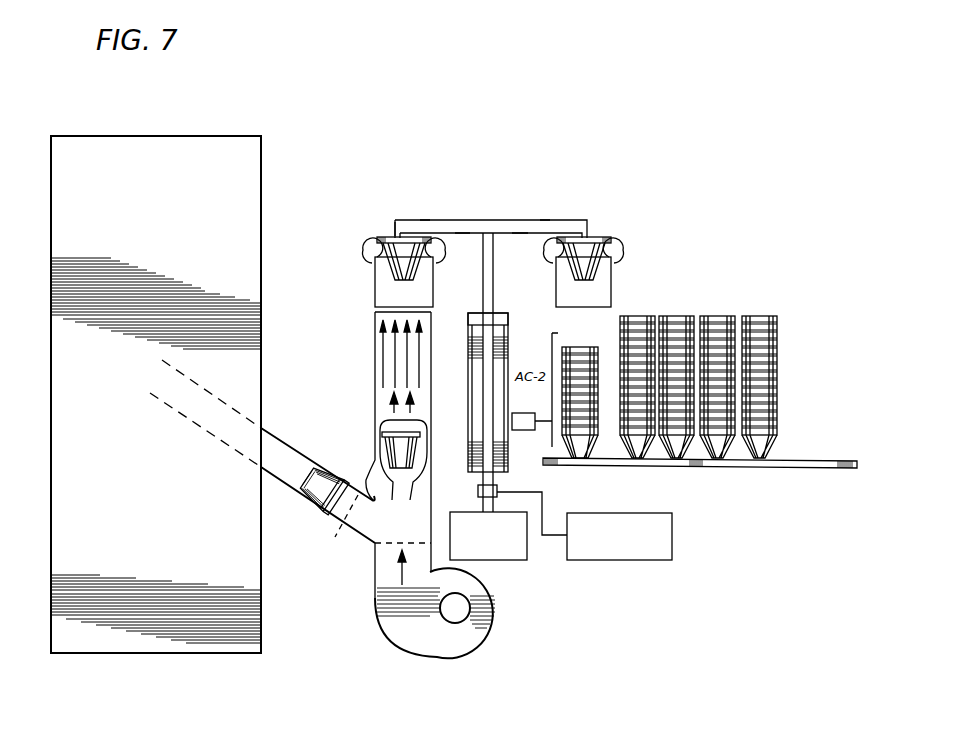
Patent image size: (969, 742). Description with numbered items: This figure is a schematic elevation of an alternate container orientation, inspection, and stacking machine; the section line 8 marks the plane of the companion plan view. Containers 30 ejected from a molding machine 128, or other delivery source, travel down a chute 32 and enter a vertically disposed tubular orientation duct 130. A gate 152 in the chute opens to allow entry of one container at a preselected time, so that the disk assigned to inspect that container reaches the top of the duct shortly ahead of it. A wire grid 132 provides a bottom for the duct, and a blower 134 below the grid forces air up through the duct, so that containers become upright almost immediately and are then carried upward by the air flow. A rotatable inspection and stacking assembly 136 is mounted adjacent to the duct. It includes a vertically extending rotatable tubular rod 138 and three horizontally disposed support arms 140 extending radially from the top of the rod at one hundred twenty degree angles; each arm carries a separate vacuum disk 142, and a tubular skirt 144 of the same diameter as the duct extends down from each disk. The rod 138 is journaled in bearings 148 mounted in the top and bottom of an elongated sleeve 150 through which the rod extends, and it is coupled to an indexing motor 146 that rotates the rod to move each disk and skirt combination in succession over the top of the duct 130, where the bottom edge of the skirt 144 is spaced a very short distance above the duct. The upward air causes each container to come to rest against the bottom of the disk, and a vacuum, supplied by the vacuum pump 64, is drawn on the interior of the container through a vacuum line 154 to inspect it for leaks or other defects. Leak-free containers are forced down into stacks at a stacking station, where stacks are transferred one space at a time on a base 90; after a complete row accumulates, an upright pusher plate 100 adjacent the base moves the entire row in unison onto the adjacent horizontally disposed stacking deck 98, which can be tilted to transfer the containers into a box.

The section line 8- 8 is at (848, 148).
The molding machine 128 is at (261, 225).
The chute 32 is at (265, 440).
The container 30 is at (333, 470).
The gate 152 is at (333, 538).
The tubular orientation duct 130 is at (432, 365).
The wire grid 132 is at (388, 548).
The blower 134 is at (452, 658).
The rotatable inspection and stacking assembly 136 is at (500, 212).
The support arm 140 is at (544, 220).
The vacuum disk 142 is at (398, 222).
The vacuum line 154 is at (520, 234).
The tubular skirt 144 is at (375, 299).
The rotatable tubular rod 138 is at (483, 293).
The elongated sleeve 150 is at (470, 386).
The bearing 148 is at (479, 473).
The upright pusher plate 100 is at (558, 338).
The 120° indexing motor 146 is at (527, 560).
The vacuum pump 64 is at (672, 535).
The stacking deck 98 is at (823, 468).
The base 90 is at (595, 467).